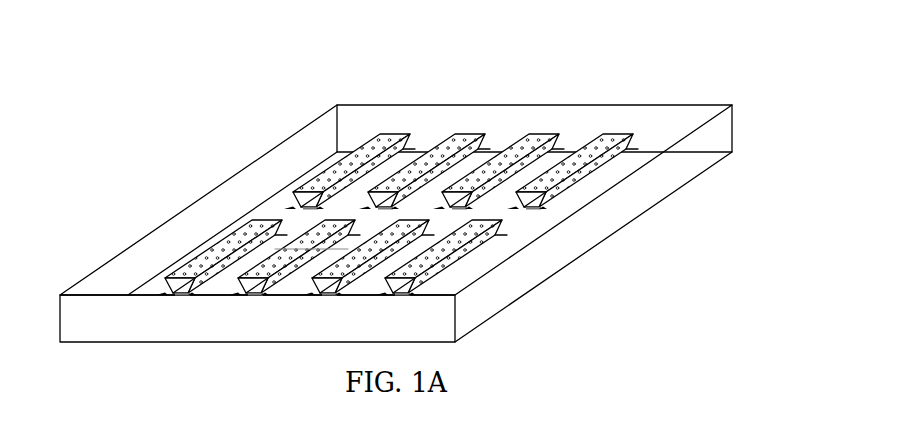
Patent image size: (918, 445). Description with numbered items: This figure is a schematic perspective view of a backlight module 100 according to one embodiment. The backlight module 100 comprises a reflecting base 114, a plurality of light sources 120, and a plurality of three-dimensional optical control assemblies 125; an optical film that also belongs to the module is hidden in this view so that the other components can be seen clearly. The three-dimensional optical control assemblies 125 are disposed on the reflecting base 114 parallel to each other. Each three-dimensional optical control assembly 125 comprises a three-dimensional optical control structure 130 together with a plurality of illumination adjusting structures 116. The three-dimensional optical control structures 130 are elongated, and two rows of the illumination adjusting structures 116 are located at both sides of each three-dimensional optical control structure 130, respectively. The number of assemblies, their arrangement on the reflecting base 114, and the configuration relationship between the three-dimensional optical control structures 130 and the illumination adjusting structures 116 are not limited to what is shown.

The backlight module 100 is at (150, 80).
The reflecting base 114 is at (158, 288).
The illumination adjusting structures 116 is at (563, 150).
The light sources 120 is at (528, 208).
The 3D optical control assemblies 125 is at (580, 41).
The 3D optical control structure 130 is at (537, 133).